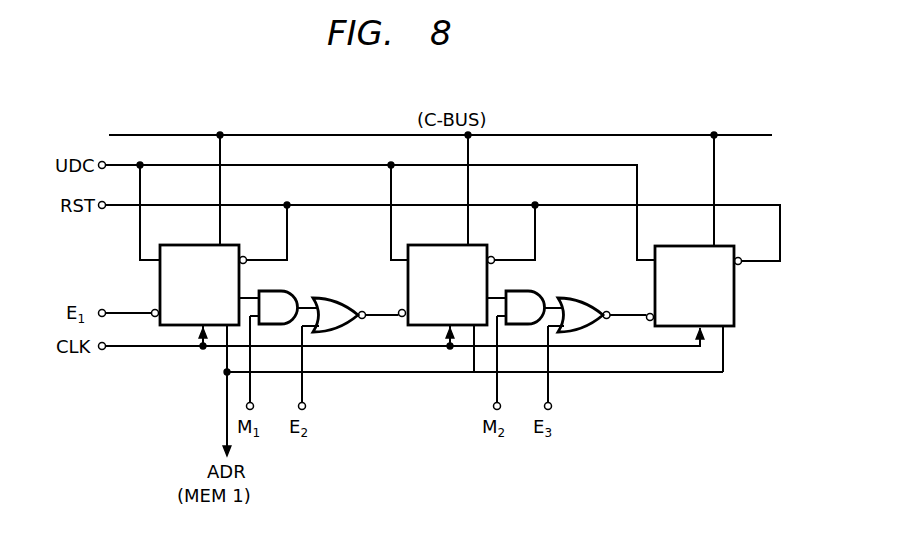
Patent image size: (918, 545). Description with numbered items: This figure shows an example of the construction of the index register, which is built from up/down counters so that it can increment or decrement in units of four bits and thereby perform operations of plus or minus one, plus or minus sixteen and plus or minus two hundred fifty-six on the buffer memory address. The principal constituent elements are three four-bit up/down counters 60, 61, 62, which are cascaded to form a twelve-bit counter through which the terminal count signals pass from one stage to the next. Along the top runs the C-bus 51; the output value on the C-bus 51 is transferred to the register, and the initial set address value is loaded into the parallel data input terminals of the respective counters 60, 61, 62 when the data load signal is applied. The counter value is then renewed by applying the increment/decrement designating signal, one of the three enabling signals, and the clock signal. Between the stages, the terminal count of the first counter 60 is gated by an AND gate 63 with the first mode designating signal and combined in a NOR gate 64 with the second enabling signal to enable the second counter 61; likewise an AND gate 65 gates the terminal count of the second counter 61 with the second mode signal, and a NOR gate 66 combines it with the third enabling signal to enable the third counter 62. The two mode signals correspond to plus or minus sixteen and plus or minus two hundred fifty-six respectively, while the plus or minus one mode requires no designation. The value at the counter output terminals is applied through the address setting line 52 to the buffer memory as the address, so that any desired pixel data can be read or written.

The C-bus 51 is at (318, 135).
The address setting line 52 is at (226, 425).
The four-bit up/down counter 60 is at (202, 245).
The four-bit up/down counter 61 is at (446, 245).
The four-bit up/down counter 62 is at (693, 246).
The AND gate 63 is at (262, 291).
The NOR gate 64 is at (317, 301).
The AND gate 65 is at (509, 291).
The NOR gate 66 is at (561, 301).